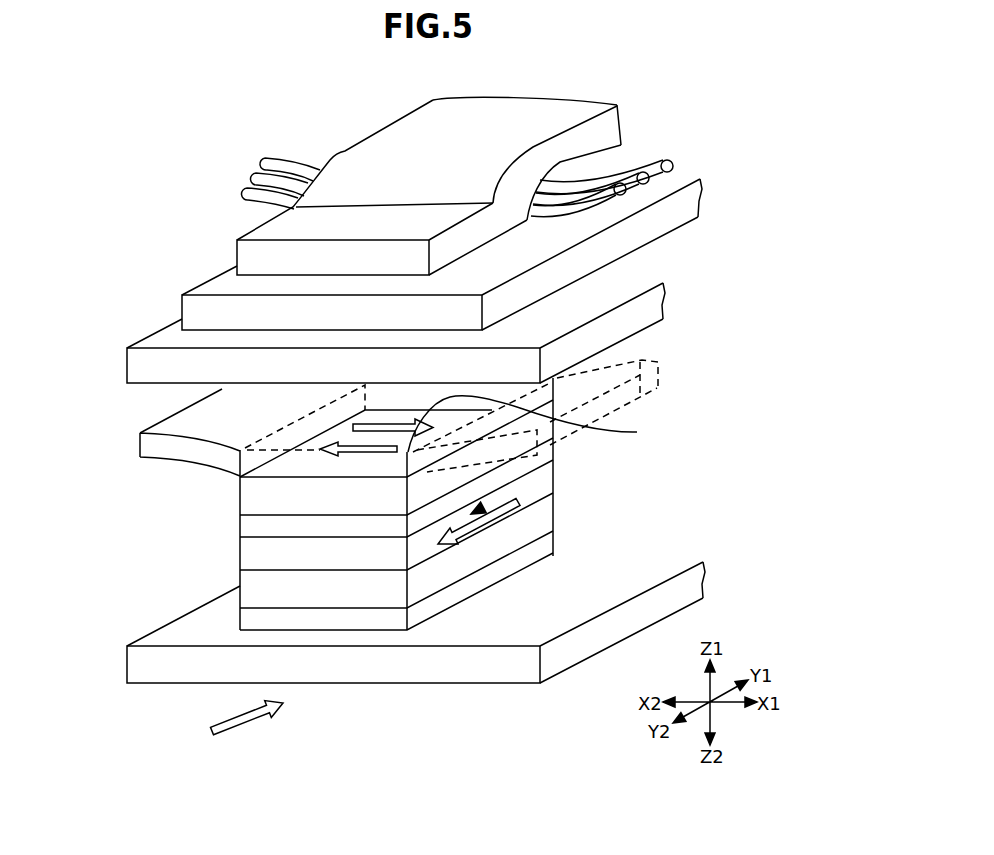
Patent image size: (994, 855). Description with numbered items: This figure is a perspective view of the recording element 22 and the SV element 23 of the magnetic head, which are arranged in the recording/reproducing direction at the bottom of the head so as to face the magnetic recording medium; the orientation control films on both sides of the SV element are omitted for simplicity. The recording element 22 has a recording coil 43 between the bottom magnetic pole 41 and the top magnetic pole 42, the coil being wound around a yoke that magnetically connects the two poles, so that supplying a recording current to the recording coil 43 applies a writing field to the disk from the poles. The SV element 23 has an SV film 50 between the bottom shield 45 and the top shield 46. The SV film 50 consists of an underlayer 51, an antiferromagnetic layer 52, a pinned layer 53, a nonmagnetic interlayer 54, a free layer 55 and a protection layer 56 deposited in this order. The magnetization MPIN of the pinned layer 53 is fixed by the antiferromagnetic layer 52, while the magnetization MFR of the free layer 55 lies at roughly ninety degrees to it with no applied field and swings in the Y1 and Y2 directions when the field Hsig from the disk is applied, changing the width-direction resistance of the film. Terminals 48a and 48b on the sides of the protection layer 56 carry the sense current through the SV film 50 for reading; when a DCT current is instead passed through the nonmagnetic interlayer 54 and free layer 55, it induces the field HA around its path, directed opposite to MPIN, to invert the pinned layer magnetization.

The recording element 22 is at (151, 155).
The SV element 23 is at (72, 347).
The bottom magnetic pole 41 is at (220, 272).
The top magnetic pole 42 is at (240, 230).
The recording coil 43 is at (263, 167).
The bottom shield 45 is at (127, 666).
The top shield 46 is at (127, 364).
The terminal 48a is at (140, 447).
The terminal 48b is at (645, 362).
The SV film 50 is at (138, 467).
The underlayer 51 is at (240, 623).
The antiferromagnetic layer 52 is at (240, 583).
The pinned layer 53 is at (242, 553).
The nonmagnetic interlayer 54 is at (242, 528).
The free layer 55 is at (242, 502).
The protection layer 56 is at (240, 474).
The magnetization of the free layer MFR is at (353, 427).
The magnetization of the pinned layer MPIN is at (372, 532).
The magnetic field induced by the DCT current HA is at (483, 508).
The magnetic field from the magnetic disk Hsig is at (212, 733).